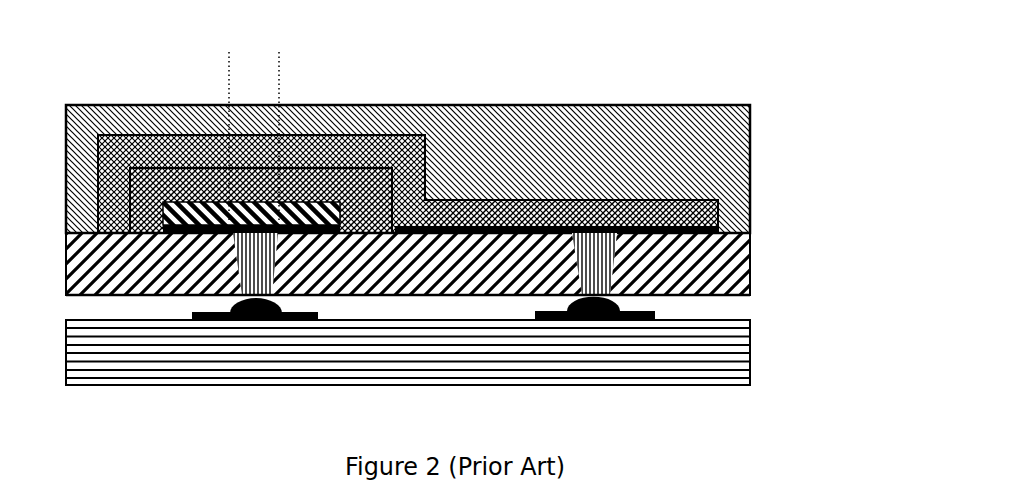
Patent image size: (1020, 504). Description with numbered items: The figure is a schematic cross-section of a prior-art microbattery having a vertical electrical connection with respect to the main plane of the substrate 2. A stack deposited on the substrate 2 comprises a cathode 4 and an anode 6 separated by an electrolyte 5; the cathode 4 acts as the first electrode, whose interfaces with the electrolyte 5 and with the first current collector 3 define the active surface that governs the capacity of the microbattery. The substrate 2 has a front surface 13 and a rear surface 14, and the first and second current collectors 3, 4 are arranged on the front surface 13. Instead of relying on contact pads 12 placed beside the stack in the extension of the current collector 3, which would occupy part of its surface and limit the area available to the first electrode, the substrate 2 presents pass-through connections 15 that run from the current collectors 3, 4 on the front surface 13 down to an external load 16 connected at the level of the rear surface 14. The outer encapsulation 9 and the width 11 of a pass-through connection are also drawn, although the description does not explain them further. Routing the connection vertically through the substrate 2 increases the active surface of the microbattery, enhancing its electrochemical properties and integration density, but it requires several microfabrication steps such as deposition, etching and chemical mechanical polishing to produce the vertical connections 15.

The substrate 2 is at (720, 259).
The first current collector 3 is at (180, 203).
The cathode 4 is at (297, 200).
The electrolyte 5 is at (333, 172).
The anode 6 is at (397, 158).
The mold compound 9 is at (585, 138).
The via width 11 is at (228, 50).
The contact pads 12 is at (203, 323).
The front surface 13 is at (752, 228).
The rear surface 14 is at (750, 292).
The pass-through connections 15 is at (277, 267).
The external load 16 is at (482, 355).